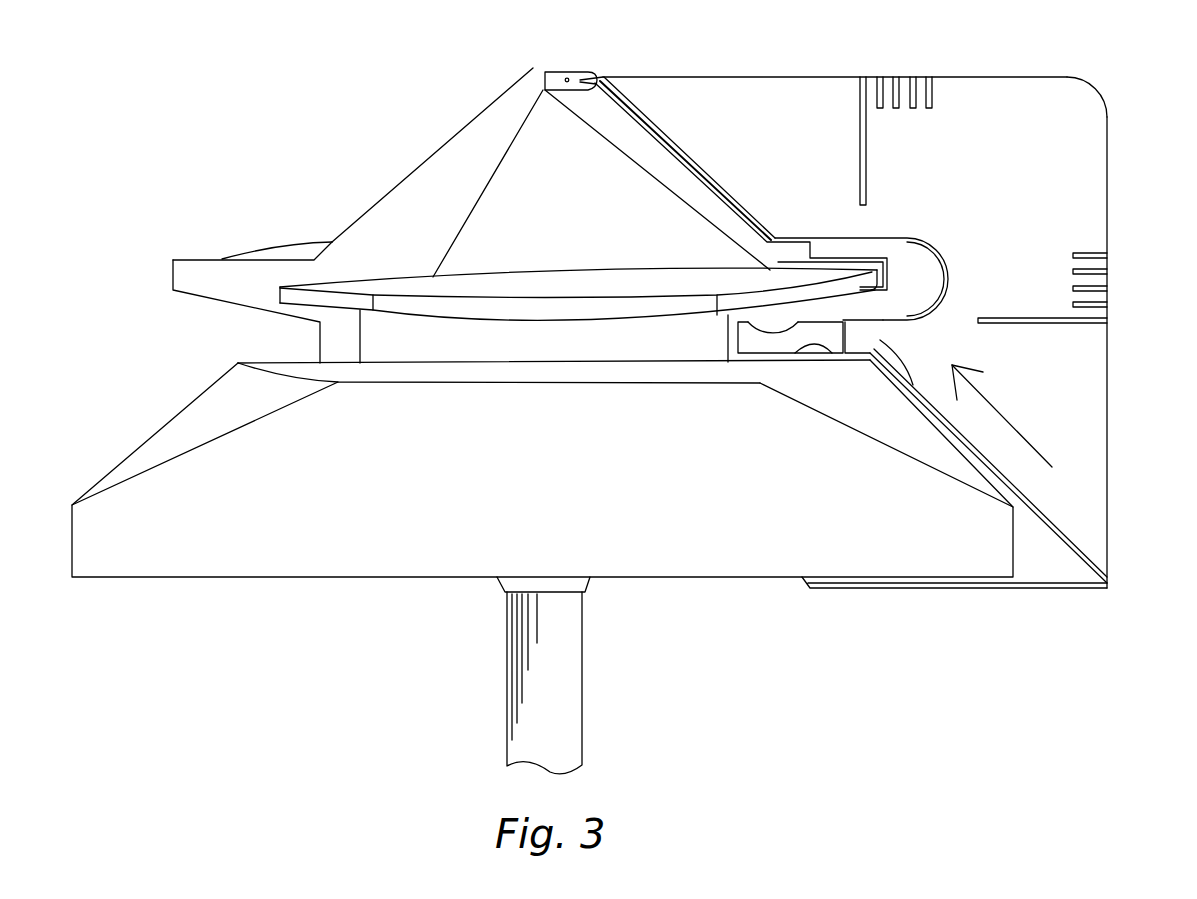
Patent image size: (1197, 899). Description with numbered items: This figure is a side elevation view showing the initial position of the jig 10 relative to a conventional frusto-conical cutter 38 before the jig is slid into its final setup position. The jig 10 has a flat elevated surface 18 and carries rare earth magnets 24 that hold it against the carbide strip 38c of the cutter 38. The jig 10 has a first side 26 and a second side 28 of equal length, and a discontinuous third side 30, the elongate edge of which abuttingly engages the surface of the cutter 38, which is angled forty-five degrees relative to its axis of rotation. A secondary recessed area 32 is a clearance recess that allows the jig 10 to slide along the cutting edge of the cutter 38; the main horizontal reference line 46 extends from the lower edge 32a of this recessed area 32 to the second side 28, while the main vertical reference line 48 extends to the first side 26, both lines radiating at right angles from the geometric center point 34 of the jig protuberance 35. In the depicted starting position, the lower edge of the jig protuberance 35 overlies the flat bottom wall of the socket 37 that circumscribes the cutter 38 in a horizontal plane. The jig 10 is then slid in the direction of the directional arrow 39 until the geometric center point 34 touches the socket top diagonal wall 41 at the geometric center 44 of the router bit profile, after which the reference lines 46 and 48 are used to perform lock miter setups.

The jig 10 is at (1034, 62).
The flat elevated surface 18 is at (1022, 197).
The rare earth magnet 24 is at (763, 323).
The first side 26 is at (718, 77).
The second side 28 is at (1109, 437).
The third side 30 is at (1064, 556).
The recessed area 32 is at (893, 273).
The lower edge of secondary recessed area 32a is at (882, 318).
The point 34 is at (852, 327).
The jig protuberance 35 is at (857, 342).
The socket 37 is at (310, 337).
The cutter 38 is at (402, 153).
The carbide strip 38c is at (834, 258).
The directional arrow 39 is at (1013, 423).
The socket top diagonal wall 41 is at (808, 307).
The geometric center of the router bit profile 44 is at (830, 305).
The main horizontal reference line 46 is at (1017, 323).
The main vertical reference line 48 is at (867, 175).